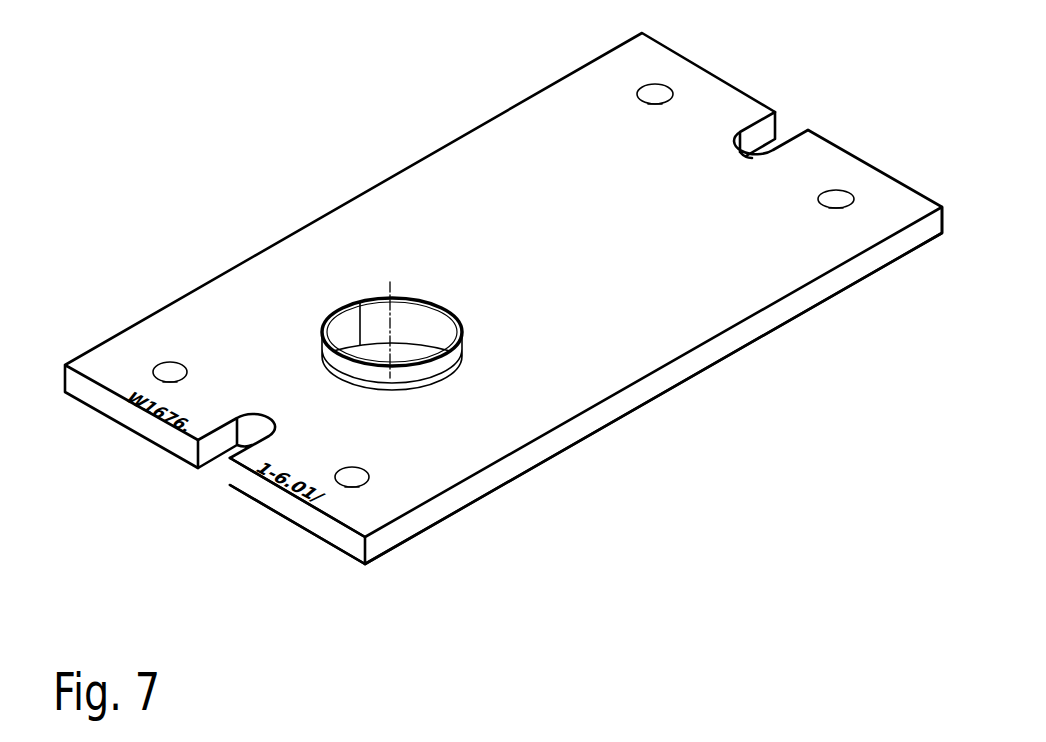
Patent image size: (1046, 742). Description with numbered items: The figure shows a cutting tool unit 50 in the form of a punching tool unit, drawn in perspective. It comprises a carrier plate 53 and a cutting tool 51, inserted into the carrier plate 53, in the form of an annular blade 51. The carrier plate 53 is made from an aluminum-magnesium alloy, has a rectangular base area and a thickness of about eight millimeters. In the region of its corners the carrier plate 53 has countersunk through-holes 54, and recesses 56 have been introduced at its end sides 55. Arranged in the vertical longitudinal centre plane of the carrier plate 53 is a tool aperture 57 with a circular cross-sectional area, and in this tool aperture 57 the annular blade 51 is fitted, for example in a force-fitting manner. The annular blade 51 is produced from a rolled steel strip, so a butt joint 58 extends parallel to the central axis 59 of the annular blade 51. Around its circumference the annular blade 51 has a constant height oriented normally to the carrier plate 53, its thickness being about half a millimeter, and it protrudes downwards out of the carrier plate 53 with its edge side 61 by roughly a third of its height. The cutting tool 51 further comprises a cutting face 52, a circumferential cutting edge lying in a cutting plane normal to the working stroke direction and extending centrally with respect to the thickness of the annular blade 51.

The cutting tool unit 50 is at (437, 138).
The cutting tool 51 is at (381, 327).
The cutting face 52 is at (370, 298).
The carrier plate 53 is at (668, 372).
The countersunk through-holes 54 is at (845, 208).
The end sides 55 is at (285, 503).
The recesses 56 is at (223, 435).
The tool aperture 57 is at (445, 376).
The butt joint 58 is at (360, 321).
The central axis 59 is at (390, 278).
The edge side 61 is at (412, 290).